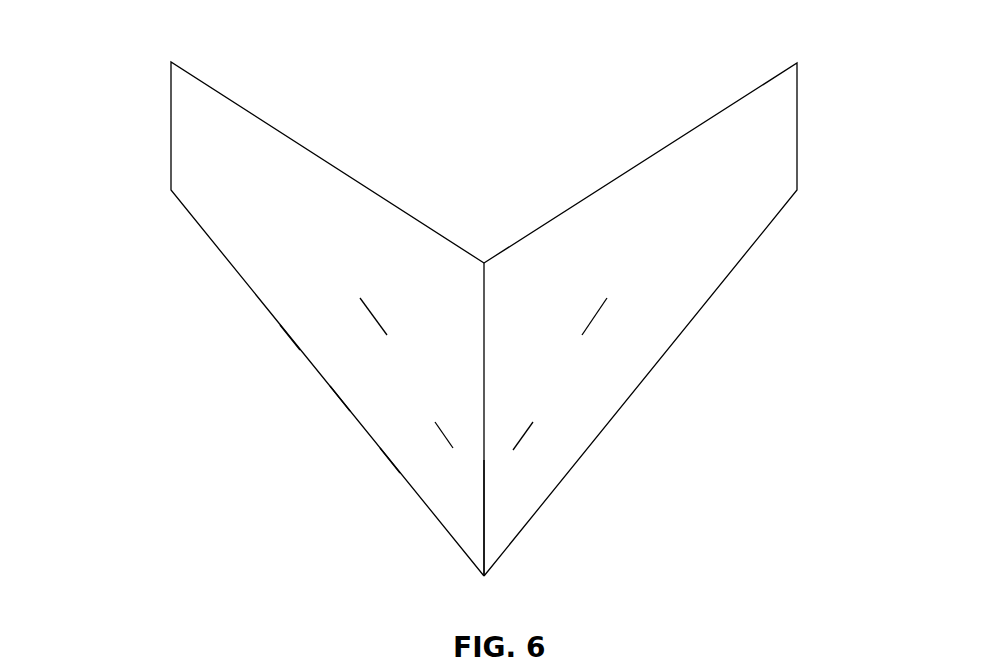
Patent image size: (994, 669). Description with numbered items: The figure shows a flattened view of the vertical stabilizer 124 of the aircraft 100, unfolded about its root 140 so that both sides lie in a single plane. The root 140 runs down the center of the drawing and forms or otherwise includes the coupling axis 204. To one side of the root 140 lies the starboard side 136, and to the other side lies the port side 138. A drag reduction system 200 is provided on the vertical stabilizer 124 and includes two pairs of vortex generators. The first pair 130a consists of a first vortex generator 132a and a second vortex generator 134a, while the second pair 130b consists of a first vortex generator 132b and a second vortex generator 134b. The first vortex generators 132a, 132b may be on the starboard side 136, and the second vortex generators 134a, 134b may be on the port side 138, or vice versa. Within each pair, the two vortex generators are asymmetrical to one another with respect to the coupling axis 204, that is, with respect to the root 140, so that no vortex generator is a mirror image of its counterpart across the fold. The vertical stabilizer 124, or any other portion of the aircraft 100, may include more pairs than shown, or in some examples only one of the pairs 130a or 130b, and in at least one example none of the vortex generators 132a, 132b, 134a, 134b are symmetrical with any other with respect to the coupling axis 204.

The aircraft 100 is at (818, 88).
The vertical stabilizer 124 is at (133, 41).
The first pair 130a is at (419, 443).
The second pair 130b is at (344, 322).
The first vortex generator 132a is at (523, 437).
The first vortex generator 132b is at (595, 318).
The second vortex generator 134a is at (452, 447).
The second vortex generator 134b is at (373, 315).
The starboard side 136 is at (748, 230).
The port side 138 is at (252, 292).
The root 140 is at (485, 306).
The drag reduction system 200 is at (366, 404).
The coupling axis 204 is at (484, 515).